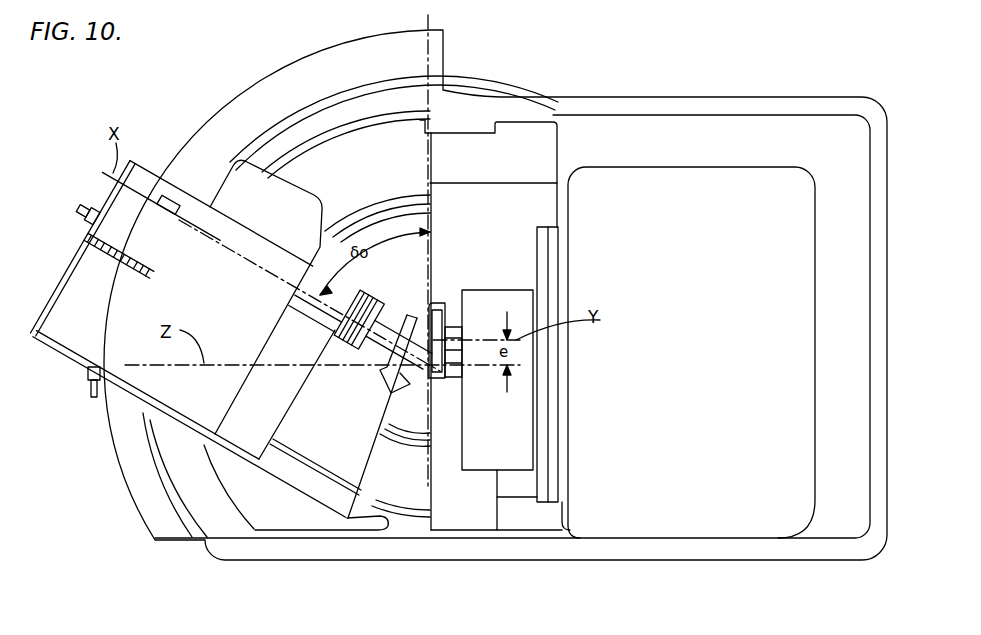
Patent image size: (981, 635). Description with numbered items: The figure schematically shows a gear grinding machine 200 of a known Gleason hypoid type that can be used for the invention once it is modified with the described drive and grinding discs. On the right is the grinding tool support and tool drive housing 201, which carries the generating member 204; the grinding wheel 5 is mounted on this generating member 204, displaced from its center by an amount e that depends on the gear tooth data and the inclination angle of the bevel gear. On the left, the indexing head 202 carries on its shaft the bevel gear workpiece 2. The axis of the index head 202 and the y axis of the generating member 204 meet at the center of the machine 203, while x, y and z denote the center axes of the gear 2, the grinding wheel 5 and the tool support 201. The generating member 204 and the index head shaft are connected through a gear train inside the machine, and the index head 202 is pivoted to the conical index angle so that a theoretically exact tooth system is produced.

The gear grinding machine 200 is at (93, 456).
The grinding tool support and tool drive housing 201 is at (692, 520).
The indexing head 202 is at (220, 213).
The center of the machine 203 is at (430, 335).
The generating member 204 is at (562, 440).
The gear 2 is at (391, 393).
The grinding wheel 5 is at (445, 305).